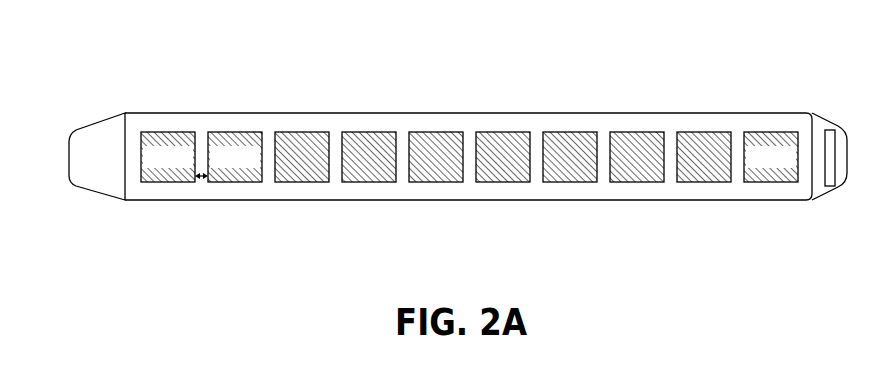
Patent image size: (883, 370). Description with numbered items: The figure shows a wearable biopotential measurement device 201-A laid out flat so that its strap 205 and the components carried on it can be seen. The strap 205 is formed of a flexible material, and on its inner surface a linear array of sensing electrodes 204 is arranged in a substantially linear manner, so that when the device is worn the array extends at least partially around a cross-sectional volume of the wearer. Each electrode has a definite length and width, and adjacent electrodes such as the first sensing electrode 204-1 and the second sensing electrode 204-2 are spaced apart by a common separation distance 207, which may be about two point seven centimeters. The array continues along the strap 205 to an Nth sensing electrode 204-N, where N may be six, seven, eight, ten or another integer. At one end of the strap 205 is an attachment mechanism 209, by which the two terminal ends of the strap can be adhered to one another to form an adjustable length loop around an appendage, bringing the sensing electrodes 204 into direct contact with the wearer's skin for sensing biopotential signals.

The wearable biopotential measurement device 201-A is at (127, 30).
The linear array of sensing electrodes 204 is at (469, 118).
The sensing electrode 204-1 is at (168, 157).
The sensing electrode 204-2 is at (235, 157).
The Nth sensing electrode 204-N is at (771, 157).
The strap 205 is at (426, 207).
The separation distance 207 is at (203, 180).
The attachment mechanism 209 is at (840, 204).